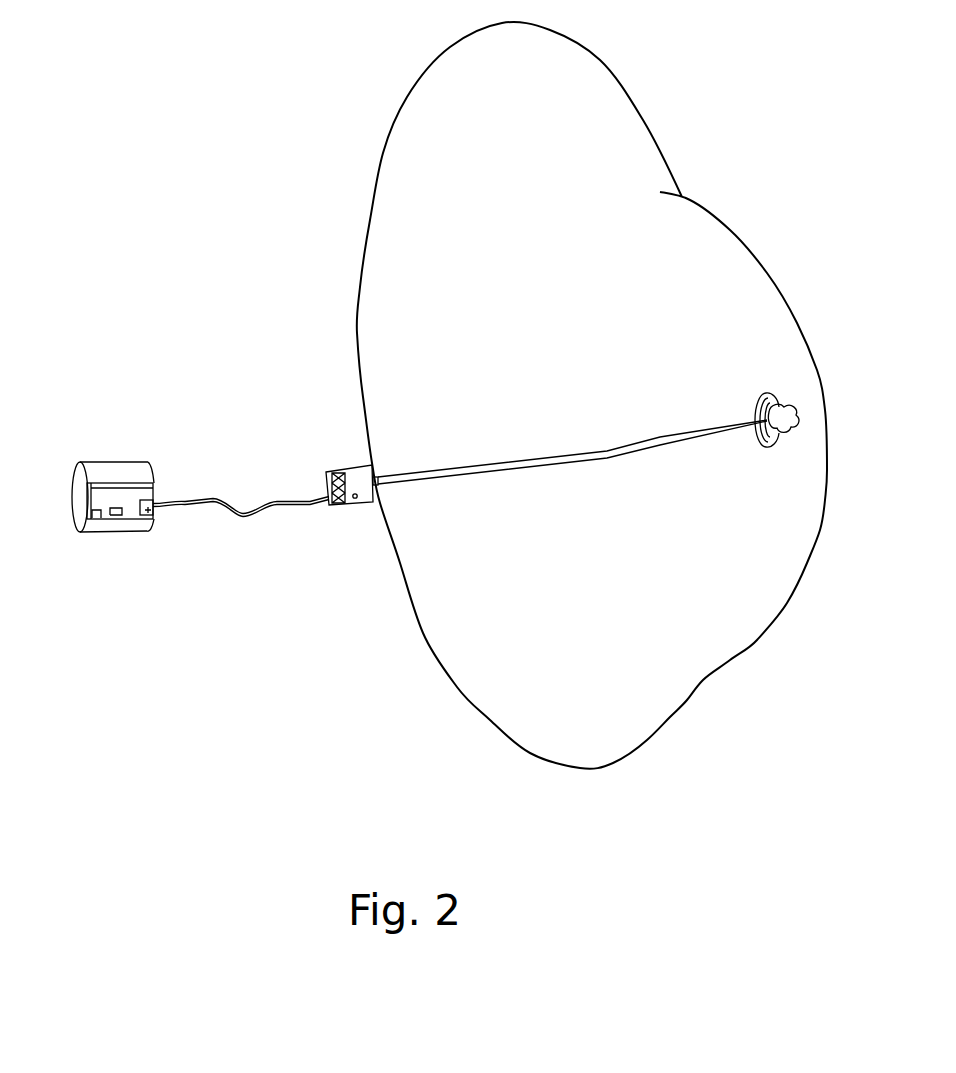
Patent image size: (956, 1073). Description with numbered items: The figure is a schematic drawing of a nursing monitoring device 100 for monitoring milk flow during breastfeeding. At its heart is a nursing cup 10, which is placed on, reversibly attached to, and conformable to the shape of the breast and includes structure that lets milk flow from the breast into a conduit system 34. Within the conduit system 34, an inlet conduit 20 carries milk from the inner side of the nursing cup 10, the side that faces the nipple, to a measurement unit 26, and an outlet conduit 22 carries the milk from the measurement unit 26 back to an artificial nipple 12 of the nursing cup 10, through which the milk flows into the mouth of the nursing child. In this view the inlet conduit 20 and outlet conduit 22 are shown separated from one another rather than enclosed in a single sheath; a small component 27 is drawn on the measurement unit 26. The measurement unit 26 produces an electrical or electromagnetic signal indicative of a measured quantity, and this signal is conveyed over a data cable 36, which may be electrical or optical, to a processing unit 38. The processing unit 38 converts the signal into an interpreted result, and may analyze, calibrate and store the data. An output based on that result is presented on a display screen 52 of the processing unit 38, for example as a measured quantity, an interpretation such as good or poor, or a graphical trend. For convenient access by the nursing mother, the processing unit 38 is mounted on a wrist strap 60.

The nursing monitoring device 100 is at (180, 176).
The nursing cup 10 is at (538, 672).
The artificial nipple 12 is at (780, 405).
The inlet conduit 20 is at (572, 473).
The outlet conduit 22 is at (557, 465).
The measurement unit 26 is at (327, 543).
The connector contact 27 is at (340, 506).
The conduit system 34 is at (662, 398).
The data cable 36 is at (240, 517).
The processing unit 38 is at (113, 515).
The display screen 52 is at (116, 500).
The wrist strap 60 is at (94, 505).